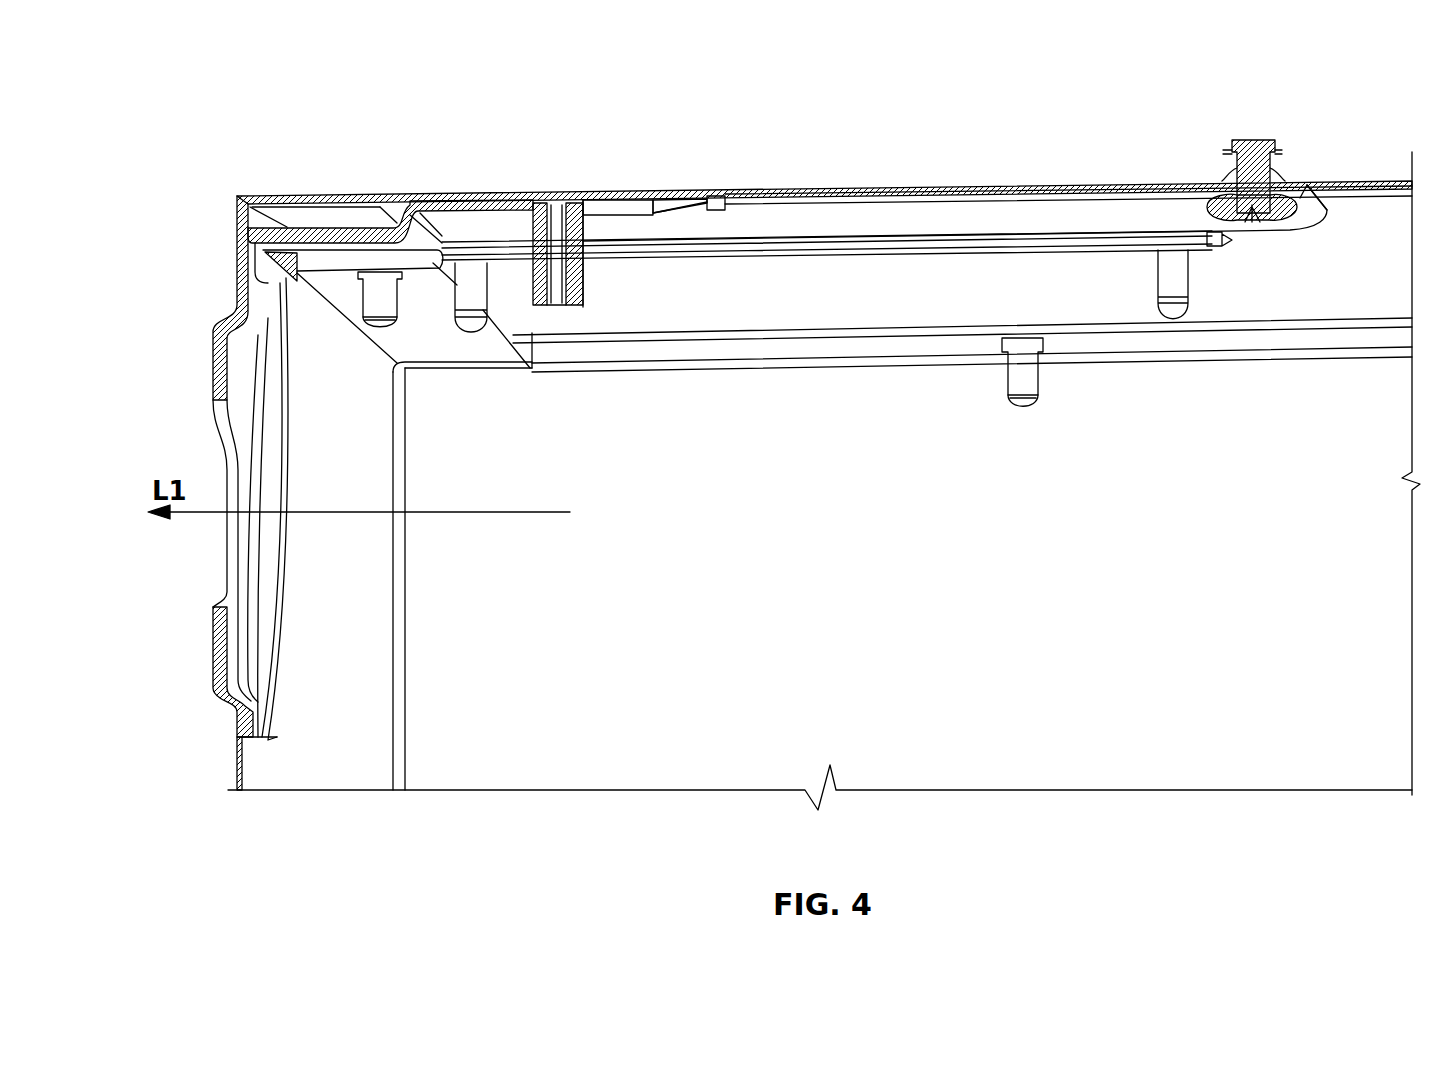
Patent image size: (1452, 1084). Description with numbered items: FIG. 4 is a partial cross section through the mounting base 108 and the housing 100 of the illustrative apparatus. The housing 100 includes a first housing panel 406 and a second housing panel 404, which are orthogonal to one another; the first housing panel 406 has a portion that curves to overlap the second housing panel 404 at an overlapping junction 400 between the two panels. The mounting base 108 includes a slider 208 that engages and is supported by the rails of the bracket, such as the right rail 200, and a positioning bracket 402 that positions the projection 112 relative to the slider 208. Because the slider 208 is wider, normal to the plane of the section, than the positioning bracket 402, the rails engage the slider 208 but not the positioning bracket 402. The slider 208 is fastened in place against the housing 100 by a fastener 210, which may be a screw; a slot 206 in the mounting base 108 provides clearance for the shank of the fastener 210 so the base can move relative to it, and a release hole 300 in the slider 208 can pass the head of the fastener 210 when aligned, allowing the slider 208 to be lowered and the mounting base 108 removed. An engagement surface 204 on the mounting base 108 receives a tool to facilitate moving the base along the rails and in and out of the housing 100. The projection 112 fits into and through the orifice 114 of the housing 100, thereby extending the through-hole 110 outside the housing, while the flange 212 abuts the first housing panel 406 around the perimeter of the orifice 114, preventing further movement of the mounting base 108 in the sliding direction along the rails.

The housing 100 is at (1347, 243).
The mounting base 108 is at (330, 258).
The through-hole 110 is at (215, 607).
The projection 112 is at (267, 642).
The orifice 114 is at (237, 708).
The right rail 200 is at (1200, 240).
The engagement surface 204 is at (560, 240).
The slot 206 is at (833, 186).
The slider 208 is at (1193, 212).
The fastener 210 is at (1257, 147).
The flange 212 is at (283, 573).
The release hole 300 is at (640, 200).
The overlapping junction 400 is at (290, 192).
The positioning bracket 402 is at (338, 228).
The second housing panel 404 is at (857, 300).
The first housing panel 406 is at (363, 712).